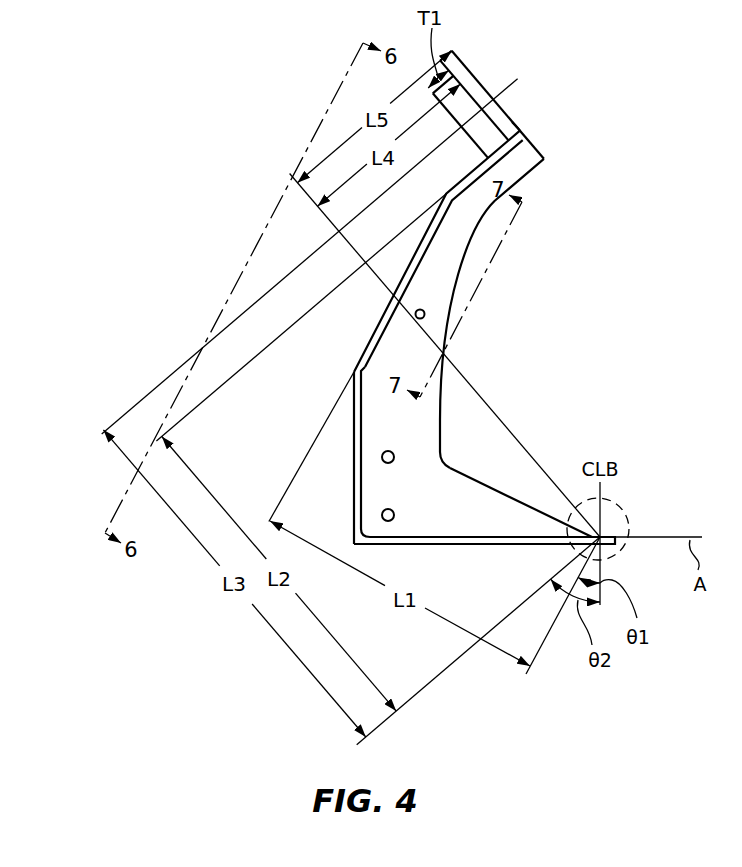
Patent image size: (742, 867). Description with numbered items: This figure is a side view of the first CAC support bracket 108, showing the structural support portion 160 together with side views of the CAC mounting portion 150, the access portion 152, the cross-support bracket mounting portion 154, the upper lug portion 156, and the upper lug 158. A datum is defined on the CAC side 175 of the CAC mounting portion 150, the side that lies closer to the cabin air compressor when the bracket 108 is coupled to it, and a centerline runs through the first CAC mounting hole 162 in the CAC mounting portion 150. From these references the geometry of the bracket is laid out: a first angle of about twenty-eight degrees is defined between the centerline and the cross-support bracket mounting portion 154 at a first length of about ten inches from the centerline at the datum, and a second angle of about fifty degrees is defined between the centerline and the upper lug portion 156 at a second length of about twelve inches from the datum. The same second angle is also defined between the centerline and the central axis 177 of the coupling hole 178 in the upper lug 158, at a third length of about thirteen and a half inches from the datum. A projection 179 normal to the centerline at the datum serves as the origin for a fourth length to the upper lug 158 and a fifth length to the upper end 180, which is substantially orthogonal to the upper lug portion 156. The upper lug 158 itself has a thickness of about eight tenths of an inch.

The first CAC support bracket 108 is at (95, 141).
The CAC mounting portion 150 is at (482, 545).
The access portion 152 is at (355, 442).
The cross-support bracket mounting portion 154 is at (422, 257).
The upper lug portion 156 is at (522, 122).
The upper lug 158 is at (495, 128).
The structural support portion 160 is at (510, 496).
The first CAC mounting hole 162 is at (604, 527).
The CAC side 175 is at (532, 537).
The central axis 177 is at (148, 386).
The coupling hole 178 is at (490, 134).
The projection 179 is at (466, 369).
The upper end 180 is at (538, 148).